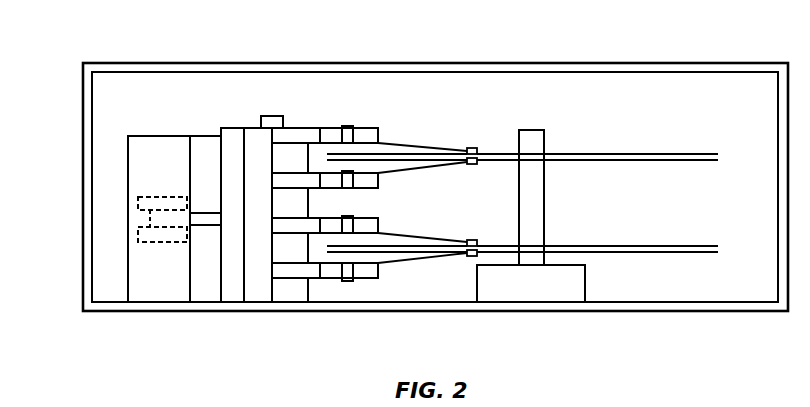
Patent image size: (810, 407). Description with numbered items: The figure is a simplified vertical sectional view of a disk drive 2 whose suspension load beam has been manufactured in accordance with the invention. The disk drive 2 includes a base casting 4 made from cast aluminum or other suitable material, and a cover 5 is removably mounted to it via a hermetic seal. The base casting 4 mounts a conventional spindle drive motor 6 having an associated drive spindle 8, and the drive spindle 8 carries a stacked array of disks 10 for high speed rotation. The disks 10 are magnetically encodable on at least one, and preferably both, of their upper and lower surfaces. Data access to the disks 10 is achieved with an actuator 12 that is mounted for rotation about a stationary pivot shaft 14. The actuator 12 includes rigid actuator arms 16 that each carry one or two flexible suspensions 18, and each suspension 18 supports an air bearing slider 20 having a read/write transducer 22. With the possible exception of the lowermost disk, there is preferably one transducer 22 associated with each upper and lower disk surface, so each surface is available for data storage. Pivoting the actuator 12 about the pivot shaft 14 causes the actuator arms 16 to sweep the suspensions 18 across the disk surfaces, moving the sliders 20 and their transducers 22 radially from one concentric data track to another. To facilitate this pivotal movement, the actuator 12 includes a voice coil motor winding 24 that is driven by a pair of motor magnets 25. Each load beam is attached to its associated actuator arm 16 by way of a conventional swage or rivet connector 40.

The disk drive 2 is at (85, 49).
The base casting 4 is at (273, 305).
The cover 5 is at (583, 63).
The spindle drive motor 6 is at (586, 283).
The drive spindle 8 is at (533, 128).
The disks 10 is at (622, 153).
The actuator 12 is at (260, 292).
The pivot shaft 14 is at (273, 116).
The actuator arms 16 is at (330, 128).
The suspensions 18 is at (415, 118).
The air bearing slider 20 is at (461, 130).
The read/write transducer 22 is at (470, 147).
The voice coil motor winding 24 is at (157, 218).
The motor magnets 25 is at (161, 197).
The swage or rivet connector 40 is at (347, 126).